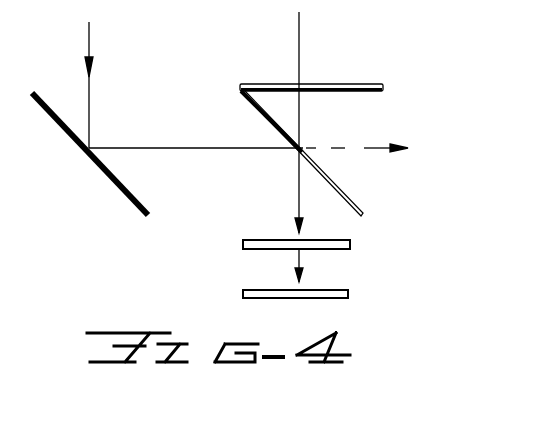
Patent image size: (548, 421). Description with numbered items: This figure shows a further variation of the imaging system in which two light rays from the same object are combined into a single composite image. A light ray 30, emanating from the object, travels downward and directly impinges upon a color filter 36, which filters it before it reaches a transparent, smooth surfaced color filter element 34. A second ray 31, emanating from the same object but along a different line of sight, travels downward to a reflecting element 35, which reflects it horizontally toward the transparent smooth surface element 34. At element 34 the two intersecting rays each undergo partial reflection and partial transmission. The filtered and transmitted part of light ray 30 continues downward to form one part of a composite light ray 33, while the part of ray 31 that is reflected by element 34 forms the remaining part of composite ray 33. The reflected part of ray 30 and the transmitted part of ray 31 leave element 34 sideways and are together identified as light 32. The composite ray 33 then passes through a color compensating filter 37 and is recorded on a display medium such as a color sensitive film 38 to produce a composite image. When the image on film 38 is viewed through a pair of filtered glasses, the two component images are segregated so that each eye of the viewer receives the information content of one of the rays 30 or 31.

The light ray 30 is at (299, 40).
The ray 31 is at (89, 42).
The reflected and transmitted light part 32 is at (350, 148).
The composite light ray 33 is at (298, 203).
The transparent smooth surfaced color filter element 34 is at (338, 182).
The reflecting element 35 is at (118, 196).
The color filter 36 is at (335, 83).
The color compensating filter 37 is at (350, 243).
The color sensitive film 38 is at (348, 290).